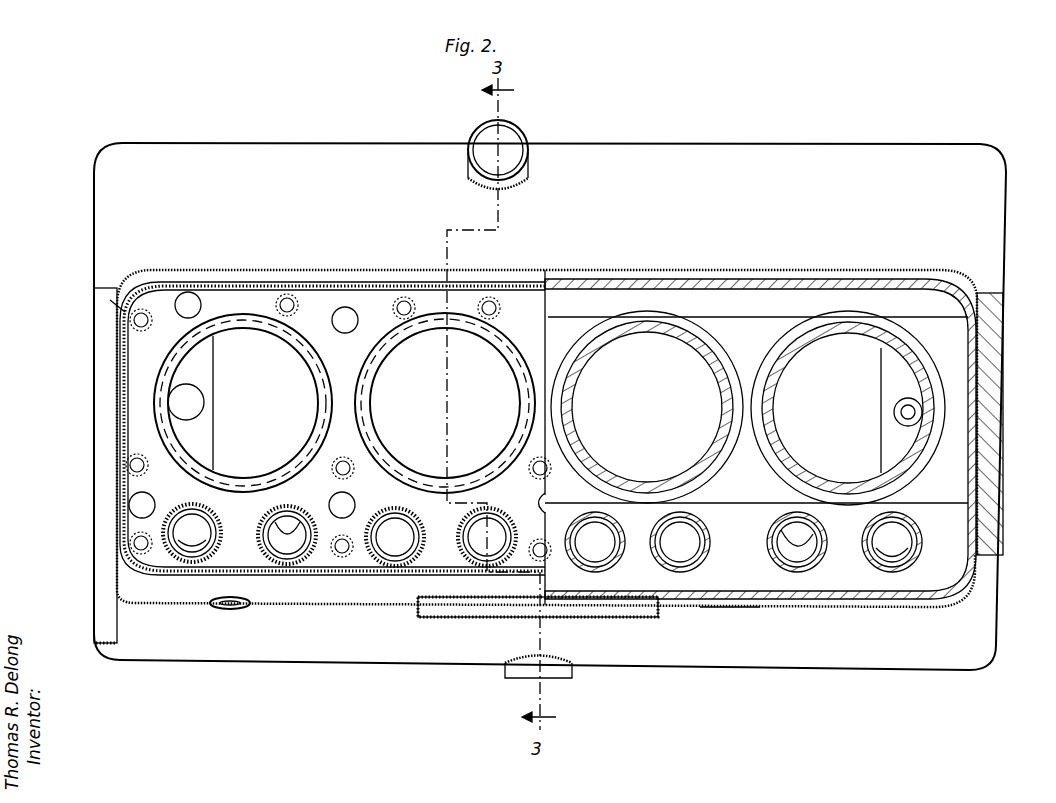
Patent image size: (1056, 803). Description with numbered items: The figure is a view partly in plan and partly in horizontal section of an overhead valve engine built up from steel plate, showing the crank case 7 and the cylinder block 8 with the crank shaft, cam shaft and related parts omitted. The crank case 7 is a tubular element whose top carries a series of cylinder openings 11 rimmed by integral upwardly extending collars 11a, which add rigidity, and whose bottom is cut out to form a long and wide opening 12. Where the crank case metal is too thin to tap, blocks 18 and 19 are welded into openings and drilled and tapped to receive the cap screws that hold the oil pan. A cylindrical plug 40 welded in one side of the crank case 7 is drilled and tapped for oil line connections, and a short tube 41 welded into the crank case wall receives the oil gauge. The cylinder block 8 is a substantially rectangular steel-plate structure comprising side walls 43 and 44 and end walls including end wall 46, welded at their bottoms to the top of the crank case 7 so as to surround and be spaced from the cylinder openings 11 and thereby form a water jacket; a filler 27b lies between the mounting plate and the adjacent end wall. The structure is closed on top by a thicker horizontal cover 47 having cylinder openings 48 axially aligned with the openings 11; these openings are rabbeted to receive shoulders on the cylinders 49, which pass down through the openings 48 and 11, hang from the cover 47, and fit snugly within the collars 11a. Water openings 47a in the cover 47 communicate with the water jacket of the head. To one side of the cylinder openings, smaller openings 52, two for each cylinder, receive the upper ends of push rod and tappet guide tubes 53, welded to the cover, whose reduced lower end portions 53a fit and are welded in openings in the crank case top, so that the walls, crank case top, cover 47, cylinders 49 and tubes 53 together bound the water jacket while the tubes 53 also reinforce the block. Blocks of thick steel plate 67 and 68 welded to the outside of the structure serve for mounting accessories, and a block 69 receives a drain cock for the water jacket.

The crank case 7 is at (270, 152).
The cylinder block 8 is at (272, 282).
The cylinder openings 11 is at (688, 336).
The collars 11a is at (578, 354).
The opening 12 is at (214, 452).
The block 18 is at (198, 402).
The block 19 is at (893, 413).
The filler 27b is at (110, 312).
The cylindrical plug 40 is at (574, 676).
The short tube 41 is at (519, 129).
The side wall 43 is at (752, 283).
The side wall 44 is at (736, 608).
The end wall 46 is at (113, 370).
The cover 47 is at (380, 296).
The water openings 47a is at (345, 308).
The cylinder openings 48 is at (320, 437).
The cylinders 49 is at (314, 402).
The smaller openings 52 is at (240, 522).
The push rod and tappet guide tubes 53 is at (604, 556).
The reduced lower end portions 53a is at (468, 552).
The block of thick steel plate 67 is at (464, 606).
The block of thick steel plate 68 is at (1004, 356).
The block 69 is at (218, 612).